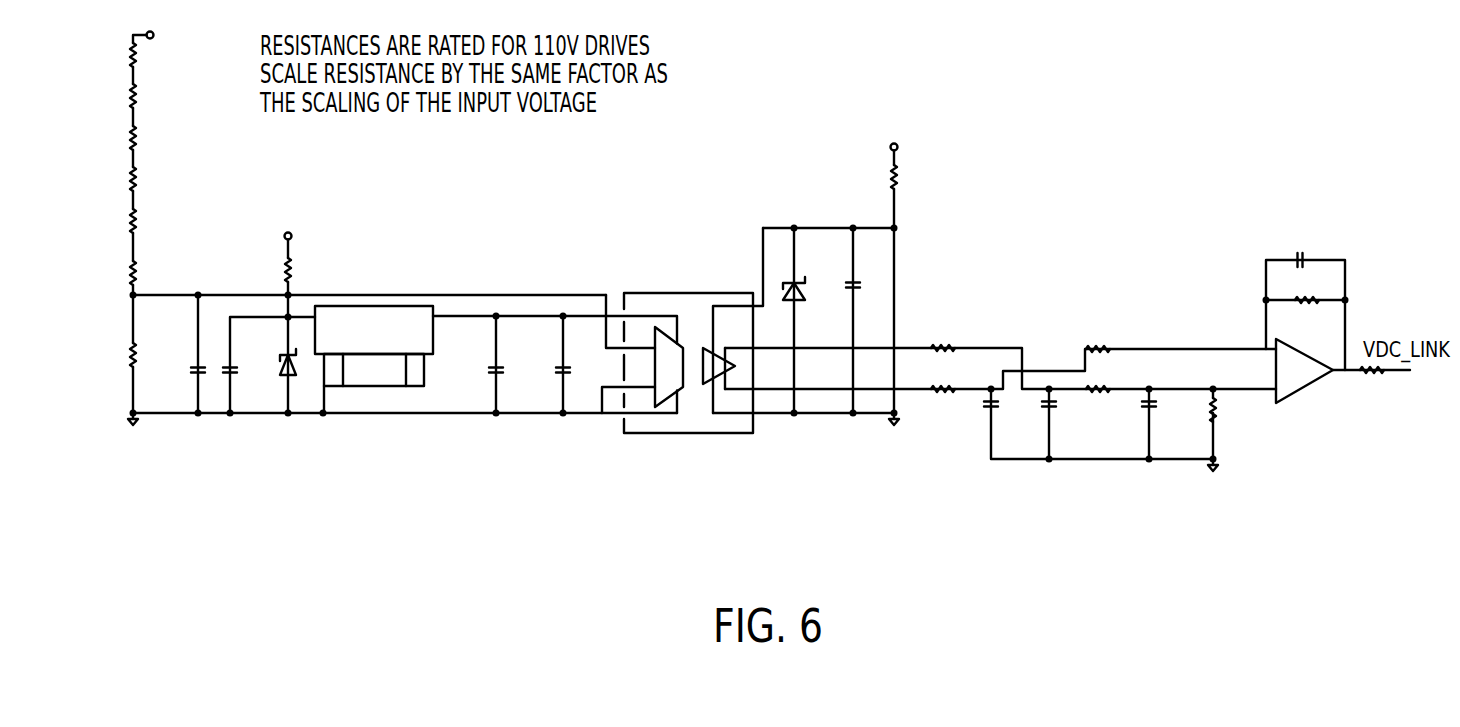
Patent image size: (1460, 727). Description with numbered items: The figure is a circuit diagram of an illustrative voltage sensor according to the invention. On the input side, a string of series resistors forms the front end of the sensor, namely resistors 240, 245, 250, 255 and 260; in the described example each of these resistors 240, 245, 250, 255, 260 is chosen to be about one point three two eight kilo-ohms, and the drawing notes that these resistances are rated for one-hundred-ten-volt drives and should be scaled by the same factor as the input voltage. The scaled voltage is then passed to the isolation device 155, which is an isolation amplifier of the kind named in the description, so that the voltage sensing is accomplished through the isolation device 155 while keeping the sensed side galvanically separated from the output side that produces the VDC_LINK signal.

The resistor R124 240 is at (137, 52).
The resistor R125 245 is at (137, 94).
The resistor R126 250 is at (137, 136).
The resistor R127 255 is at (137, 177).
The resistor R128 260 is at (137, 219).
The isolation device 155 is at (728, 434).